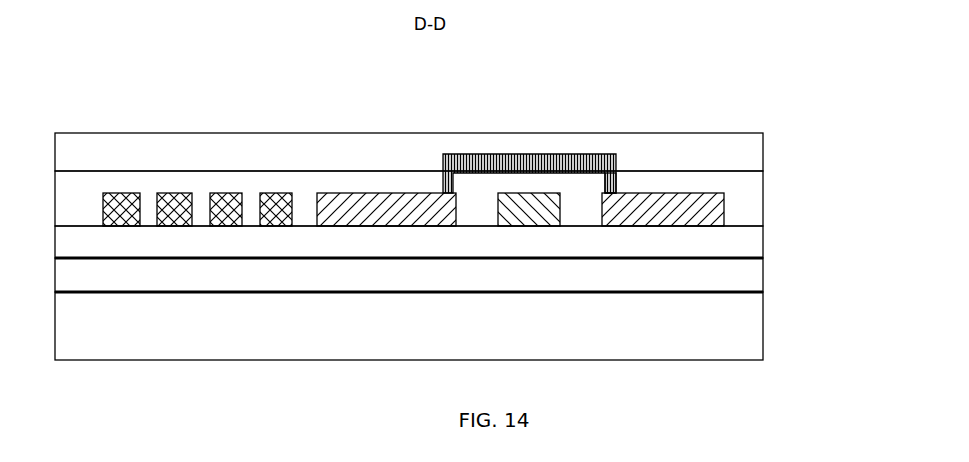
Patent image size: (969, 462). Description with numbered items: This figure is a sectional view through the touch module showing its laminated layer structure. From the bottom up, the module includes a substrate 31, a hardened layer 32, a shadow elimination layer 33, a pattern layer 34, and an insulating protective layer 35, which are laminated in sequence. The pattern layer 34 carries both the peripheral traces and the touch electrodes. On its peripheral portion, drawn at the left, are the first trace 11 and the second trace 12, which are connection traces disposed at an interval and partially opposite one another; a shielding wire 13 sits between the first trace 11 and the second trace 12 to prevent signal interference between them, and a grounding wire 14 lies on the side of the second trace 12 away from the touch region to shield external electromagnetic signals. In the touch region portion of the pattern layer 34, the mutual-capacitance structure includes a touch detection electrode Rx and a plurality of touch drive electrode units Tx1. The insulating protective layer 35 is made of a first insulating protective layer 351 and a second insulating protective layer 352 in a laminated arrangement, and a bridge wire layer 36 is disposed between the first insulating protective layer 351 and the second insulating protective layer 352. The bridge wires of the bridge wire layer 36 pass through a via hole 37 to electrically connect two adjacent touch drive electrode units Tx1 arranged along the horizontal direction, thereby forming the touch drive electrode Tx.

The first trace 11 is at (283, 193).
The second trace 12 is at (230, 193).
The shielding wire 13 is at (175, 193).
The grounding wire 14 is at (125, 193).
The substrate 31 is at (722, 347).
The hardened layer 32 is at (735, 277).
The shadow elimination layer 33 is at (728, 242).
The pattern layer 34 is at (467, 139).
The insulating protective layer 35 is at (472, 179).
The first insulating protective layer 351 is at (735, 186).
The second insulating protective layer 352 is at (733, 147).
The bridge wire layer 36 is at (602, 156).
The via hole 37 is at (444, 178).
The touch drive electrode Tx is at (683, 88).
The touch drive electrode unit Tx1 is at (358, 193).
The touch detection electrode Rx is at (523, 194).